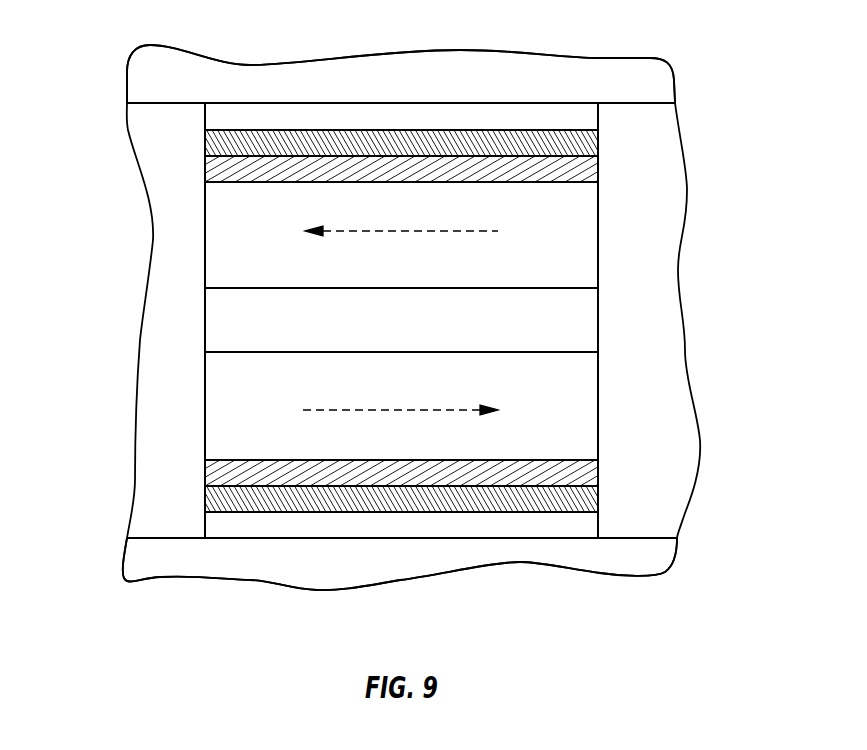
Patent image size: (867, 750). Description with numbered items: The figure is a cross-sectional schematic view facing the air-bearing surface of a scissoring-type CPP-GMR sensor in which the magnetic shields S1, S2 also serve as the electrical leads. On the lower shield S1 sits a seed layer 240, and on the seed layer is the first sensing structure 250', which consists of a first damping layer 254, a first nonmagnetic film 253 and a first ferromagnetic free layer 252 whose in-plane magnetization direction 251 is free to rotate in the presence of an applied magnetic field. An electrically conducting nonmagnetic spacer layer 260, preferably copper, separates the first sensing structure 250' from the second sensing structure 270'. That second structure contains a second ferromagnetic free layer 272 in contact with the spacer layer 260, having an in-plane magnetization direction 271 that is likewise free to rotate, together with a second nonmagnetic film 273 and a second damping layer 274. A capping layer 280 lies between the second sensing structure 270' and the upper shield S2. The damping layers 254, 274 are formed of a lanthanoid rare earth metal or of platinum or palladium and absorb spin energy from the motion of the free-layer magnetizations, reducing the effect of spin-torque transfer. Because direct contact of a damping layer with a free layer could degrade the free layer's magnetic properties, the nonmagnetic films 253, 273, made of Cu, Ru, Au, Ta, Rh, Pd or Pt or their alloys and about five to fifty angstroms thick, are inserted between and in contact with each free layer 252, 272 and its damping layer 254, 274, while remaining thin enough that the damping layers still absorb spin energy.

The magnetic shield S1 is at (658, 557).
The magnetic shield S2 is at (667, 87).
The seed layer 240 is at (583, 530).
The first sensing structure 250' is at (310, 432).
The magnetization direction 251 is at (400, 409).
The first ferromagnetic free layer 252 is at (583, 417).
The first nonmagnetic film 253 is at (583, 470).
The first damping layer 254 is at (583, 505).
The spacer layer 260 is at (583, 317).
The second sensing structure 270' is at (312, 209).
The magnetization direction 271 is at (400, 230).
The second ferromagnetic free layer 272 is at (583, 235).
The second nonmagnetic film 273 is at (583, 167).
The second damping layer 274 is at (583, 136).
The capping layer 280 is at (583, 109).